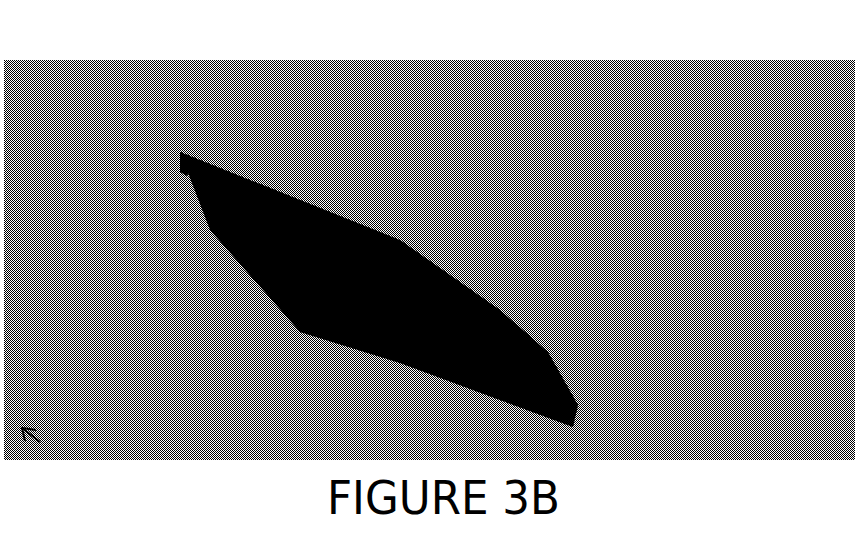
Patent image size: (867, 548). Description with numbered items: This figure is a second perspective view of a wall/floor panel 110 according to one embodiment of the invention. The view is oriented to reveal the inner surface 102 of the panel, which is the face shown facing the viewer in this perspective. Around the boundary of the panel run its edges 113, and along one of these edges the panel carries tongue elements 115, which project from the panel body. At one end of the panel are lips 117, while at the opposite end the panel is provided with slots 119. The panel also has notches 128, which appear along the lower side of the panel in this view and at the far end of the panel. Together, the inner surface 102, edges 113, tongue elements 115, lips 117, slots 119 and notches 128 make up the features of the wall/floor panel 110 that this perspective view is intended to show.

The wall/floor panel 110 is at (366, 268).
The inner surface 102 is at (353, 297).
The edges 113 is at (273, 213).
The tongue elements 115 is at (181, 173).
The lips 117 is at (180, 172).
The slots 119 is at (437, 263).
The notches 128 is at (547, 420).